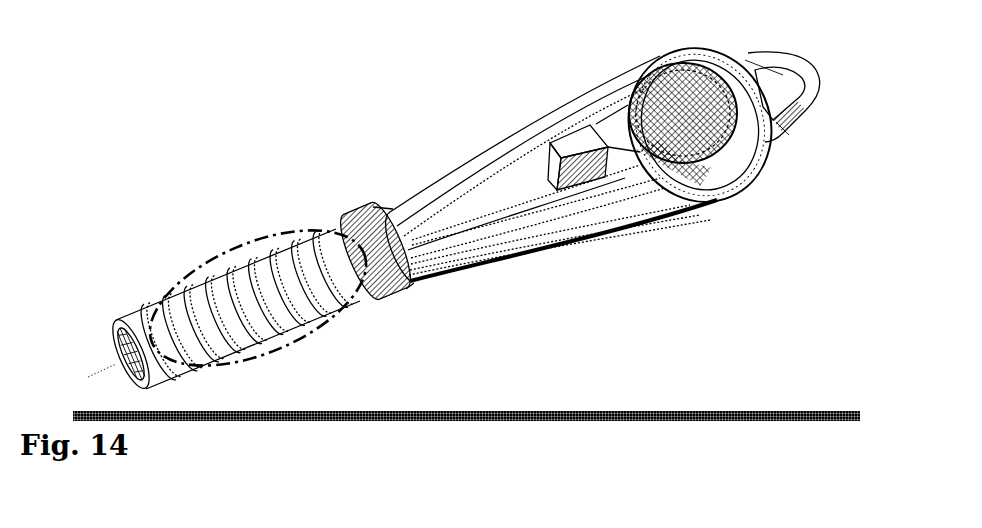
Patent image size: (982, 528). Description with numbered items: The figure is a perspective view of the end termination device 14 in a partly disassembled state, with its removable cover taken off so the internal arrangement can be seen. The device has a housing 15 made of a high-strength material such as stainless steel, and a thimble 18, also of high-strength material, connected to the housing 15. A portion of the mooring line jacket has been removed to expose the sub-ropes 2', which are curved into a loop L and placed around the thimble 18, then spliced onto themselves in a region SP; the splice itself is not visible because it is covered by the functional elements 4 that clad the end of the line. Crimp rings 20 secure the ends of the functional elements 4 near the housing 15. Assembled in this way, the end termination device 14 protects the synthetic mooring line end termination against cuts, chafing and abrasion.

The functional element 4 is at (235, 317).
The splice region SP is at (258, 298).
The crimp ring 20 is at (329, 238).
The sub-rope 2' is at (590, 153).
The end termination device 14 is at (559, 255).
The loop L is at (595, 231).
The thimble 18 is at (632, 107).
The housing 15 is at (766, 152).